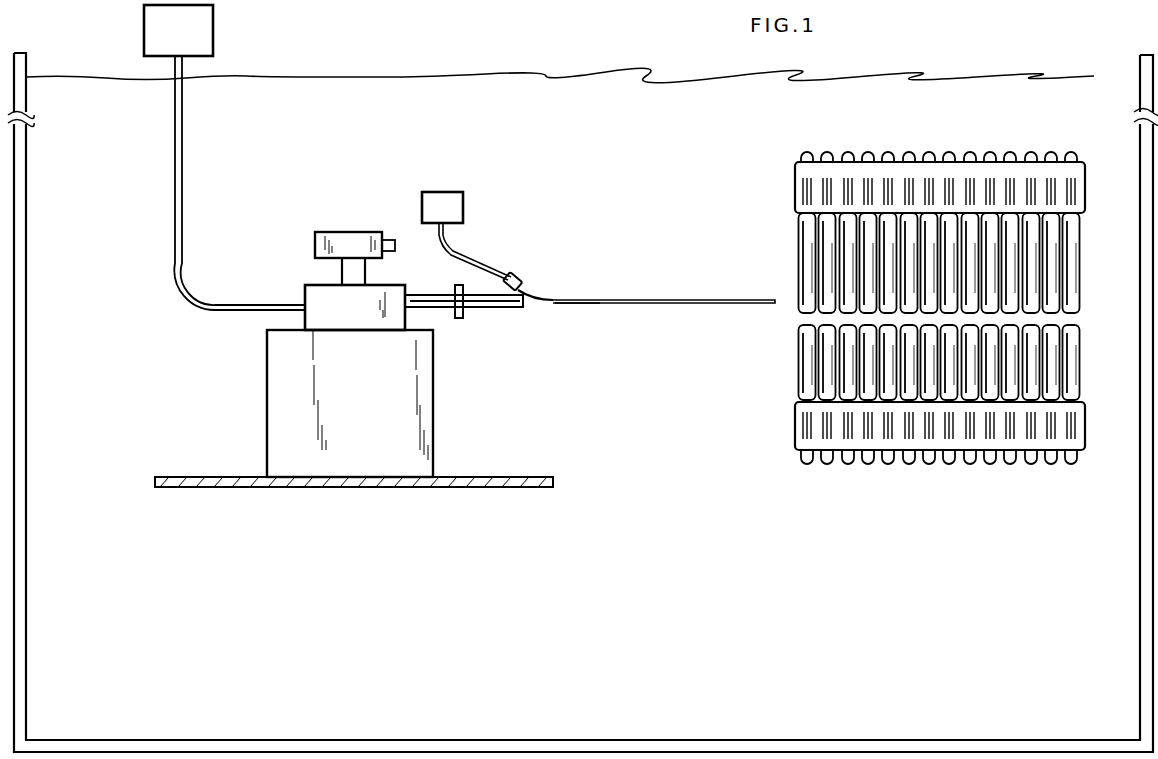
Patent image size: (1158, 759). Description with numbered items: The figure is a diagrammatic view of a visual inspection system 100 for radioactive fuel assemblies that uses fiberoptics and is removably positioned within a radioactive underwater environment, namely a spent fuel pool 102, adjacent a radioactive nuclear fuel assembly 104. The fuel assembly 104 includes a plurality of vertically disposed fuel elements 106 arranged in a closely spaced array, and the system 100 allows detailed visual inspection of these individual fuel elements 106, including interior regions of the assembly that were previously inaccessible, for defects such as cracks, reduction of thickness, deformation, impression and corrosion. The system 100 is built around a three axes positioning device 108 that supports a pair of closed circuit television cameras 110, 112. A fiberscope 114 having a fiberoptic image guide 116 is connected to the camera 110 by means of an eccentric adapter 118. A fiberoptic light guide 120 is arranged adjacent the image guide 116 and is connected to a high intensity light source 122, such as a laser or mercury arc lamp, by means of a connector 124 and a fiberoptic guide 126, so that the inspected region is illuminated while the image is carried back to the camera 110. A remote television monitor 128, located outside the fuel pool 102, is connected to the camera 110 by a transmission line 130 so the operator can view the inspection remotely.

The visual inspection system 100 is at (456, 406).
The spent fuel pool 102 is at (544, 88).
The radioactive nuclear fuel assembly 104 is at (924, 147).
The fuel elements 106 is at (1075, 292).
The three axes positioning device 108 is at (289, 397).
The closed circuit television camera 110 is at (306, 294).
The closed circuit television camera 112 is at (338, 236).
The fiberscope 114 is at (483, 310).
The fiberoptic image guide 116 is at (575, 305).
The eccentric adapter 118 is at (407, 313).
The fiberoptic light guide 120 is at (610, 300).
The high intensity light source 122 is at (450, 196).
The connector 124 is at (515, 278).
The fiberoptic guide 126 is at (463, 250).
The remote television monitor 128 is at (214, 33).
The transmission line 130 is at (183, 200).